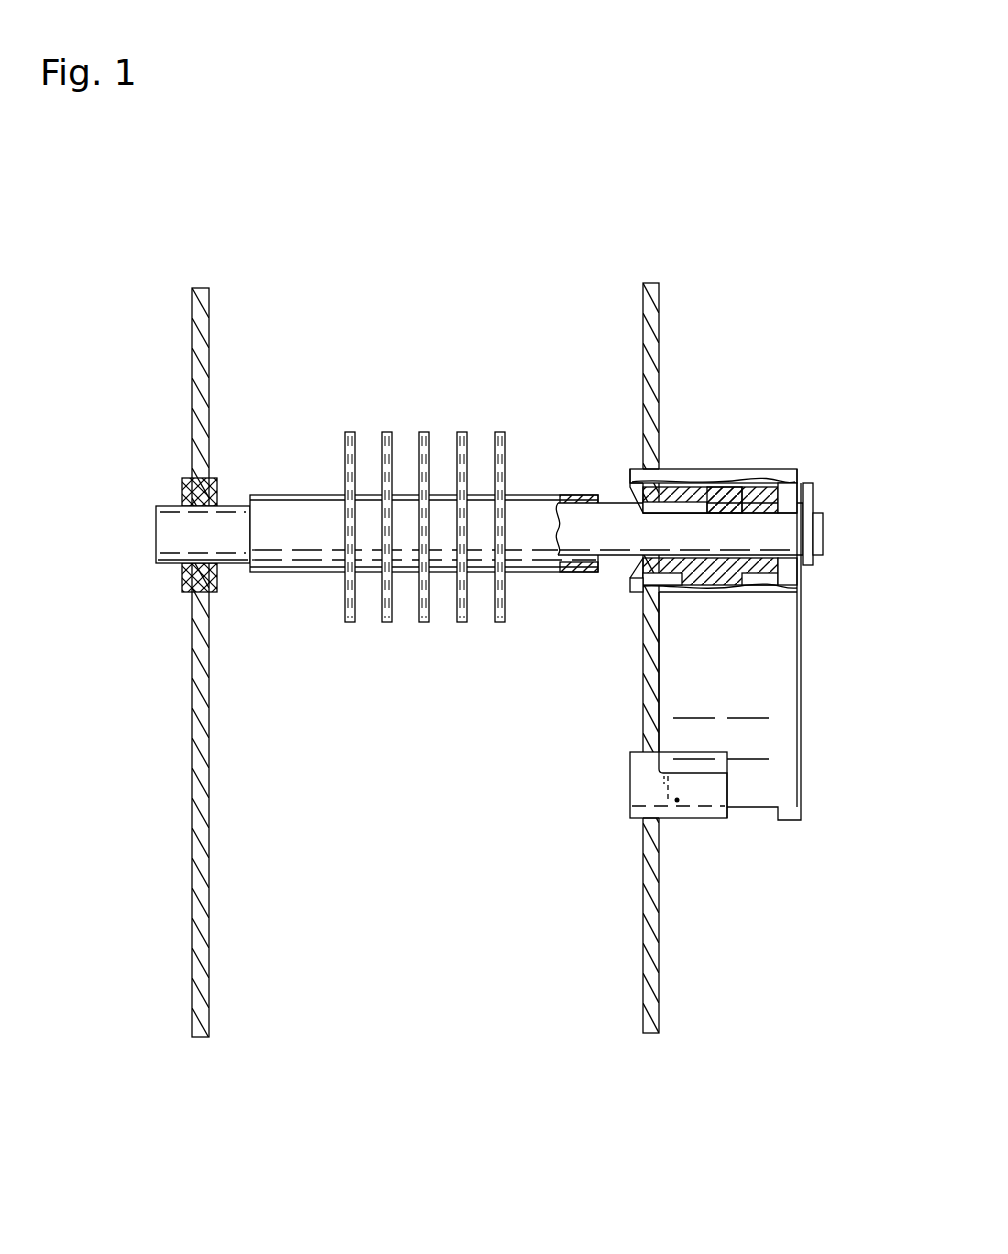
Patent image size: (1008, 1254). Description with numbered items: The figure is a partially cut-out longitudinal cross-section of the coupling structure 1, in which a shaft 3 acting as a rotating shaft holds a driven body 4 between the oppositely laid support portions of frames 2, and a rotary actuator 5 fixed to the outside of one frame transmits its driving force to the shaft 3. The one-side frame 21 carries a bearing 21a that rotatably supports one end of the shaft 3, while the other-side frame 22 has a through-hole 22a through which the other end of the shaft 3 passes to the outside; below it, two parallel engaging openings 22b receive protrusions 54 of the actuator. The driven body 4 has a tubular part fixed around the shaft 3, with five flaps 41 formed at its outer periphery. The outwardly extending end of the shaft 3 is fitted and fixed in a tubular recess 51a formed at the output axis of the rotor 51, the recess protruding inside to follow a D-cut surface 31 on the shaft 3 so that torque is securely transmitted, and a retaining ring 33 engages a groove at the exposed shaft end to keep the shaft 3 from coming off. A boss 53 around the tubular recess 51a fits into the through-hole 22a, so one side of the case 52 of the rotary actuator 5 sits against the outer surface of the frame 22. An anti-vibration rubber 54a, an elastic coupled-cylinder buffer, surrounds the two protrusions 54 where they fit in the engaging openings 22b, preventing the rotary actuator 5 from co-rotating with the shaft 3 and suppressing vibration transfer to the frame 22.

The coupling structure 1 is at (590, 193).
The frames 2 is at (213, 1083).
The one-side frame 21 is at (191, 294).
The bearing 21a is at (185, 492).
The other-side frame 22 is at (651, 303).
The through-hole 22a is at (657, 470).
The engaging openings 22b is at (640, 818).
The shaft 3 is at (176, 543).
The D-cut surface 31 is at (738, 500).
The retaining ring 33 is at (812, 498).
The driven body 4 is at (325, 508).
The flaps 41 is at (388, 623).
The rotary actuator 5 is at (735, 745).
The rotor 51 is at (760, 573).
The tubular recess 51a is at (633, 498).
The case 52 is at (747, 690).
The boss 53 is at (632, 583).
The protrusions 54 is at (677, 800).
The anti-vibration rubber 54a is at (628, 757).